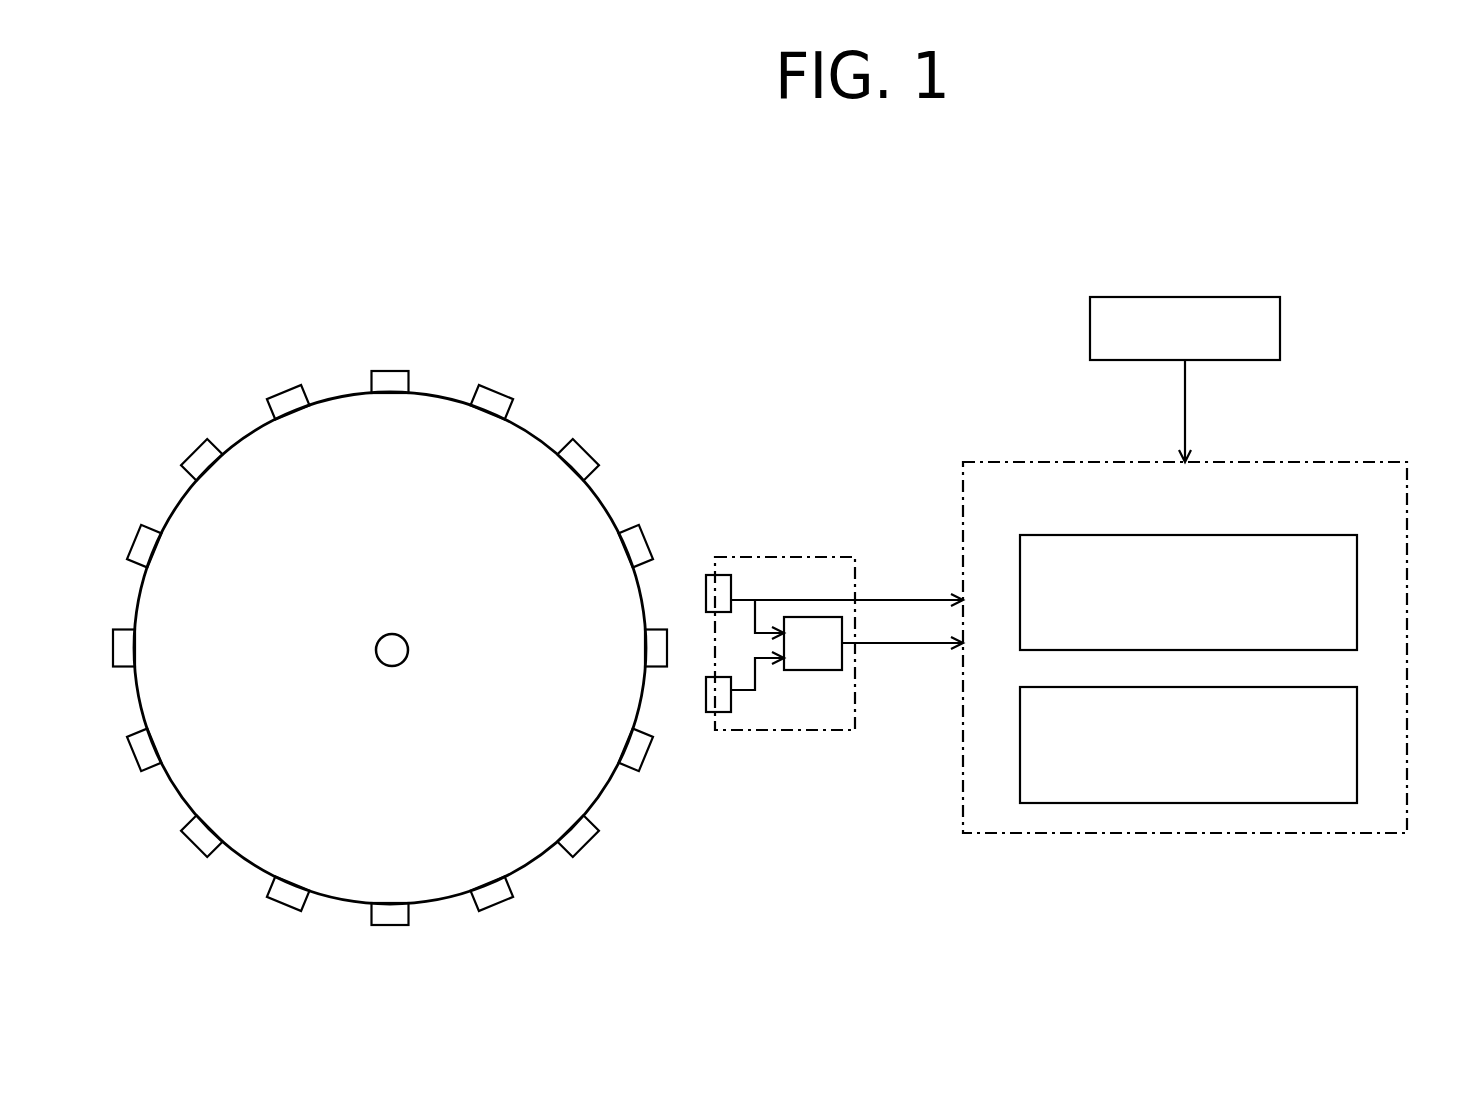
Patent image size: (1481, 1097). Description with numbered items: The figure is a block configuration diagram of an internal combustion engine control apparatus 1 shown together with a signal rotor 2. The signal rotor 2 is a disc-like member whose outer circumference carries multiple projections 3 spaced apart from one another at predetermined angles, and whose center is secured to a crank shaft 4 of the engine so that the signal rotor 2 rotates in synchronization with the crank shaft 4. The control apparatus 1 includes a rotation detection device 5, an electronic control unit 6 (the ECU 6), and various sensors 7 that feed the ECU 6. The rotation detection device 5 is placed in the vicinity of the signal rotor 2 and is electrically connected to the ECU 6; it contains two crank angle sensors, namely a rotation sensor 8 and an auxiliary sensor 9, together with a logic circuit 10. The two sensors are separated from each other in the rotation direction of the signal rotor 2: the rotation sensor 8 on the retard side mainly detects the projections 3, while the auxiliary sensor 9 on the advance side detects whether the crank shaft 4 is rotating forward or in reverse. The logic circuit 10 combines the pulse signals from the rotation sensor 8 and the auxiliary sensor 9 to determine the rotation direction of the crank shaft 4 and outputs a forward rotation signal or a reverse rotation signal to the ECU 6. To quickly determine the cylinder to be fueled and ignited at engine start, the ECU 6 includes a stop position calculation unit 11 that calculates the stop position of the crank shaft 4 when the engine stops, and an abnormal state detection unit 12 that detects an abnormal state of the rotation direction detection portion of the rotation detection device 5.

The internal combustion engine control apparatus 1 is at (898, 357).
The signal rotor 2 is at (437, 397).
The projections 3 is at (587, 450).
The crank shaft 4 is at (400, 634).
The rotation detection device 5 is at (815, 555).
The electronic control unit 6 is at (1345, 462).
The various sensors 7 is at (1190, 297).
The rotation sensor 8 is at (731, 588).
The auxiliary sensor 9 is at (731, 704).
The logic circuit 10 is at (822, 672).
The stop position calculation unit 11 is at (1357, 600).
The abnormal state detection unit 12 is at (1357, 752).